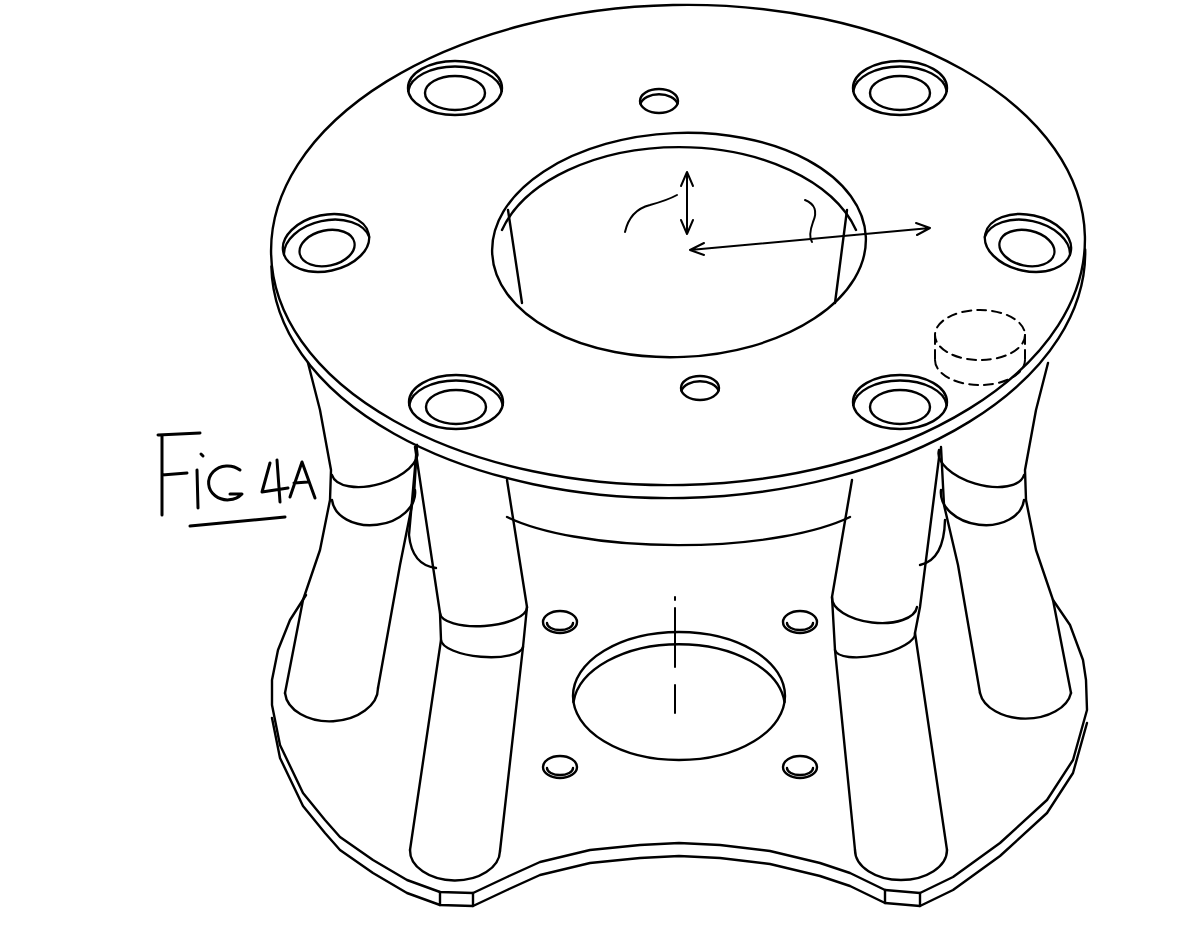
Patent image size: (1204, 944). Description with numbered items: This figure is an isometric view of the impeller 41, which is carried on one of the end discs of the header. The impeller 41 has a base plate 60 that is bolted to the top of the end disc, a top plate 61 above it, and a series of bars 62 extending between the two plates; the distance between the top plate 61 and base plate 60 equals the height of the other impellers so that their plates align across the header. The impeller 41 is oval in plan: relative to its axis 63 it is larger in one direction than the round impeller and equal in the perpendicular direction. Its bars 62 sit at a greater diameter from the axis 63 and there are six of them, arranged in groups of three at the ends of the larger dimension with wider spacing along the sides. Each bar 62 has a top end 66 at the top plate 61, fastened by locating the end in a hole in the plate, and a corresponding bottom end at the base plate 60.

The impeller 41 is at (1079, 117).
The base plate 60 is at (1055, 787).
The top plate 61 is at (1053, 307).
The bars 62 is at (1030, 556).
The axis 63 is at (676, 590).
The top end 66 is at (1067, 238).